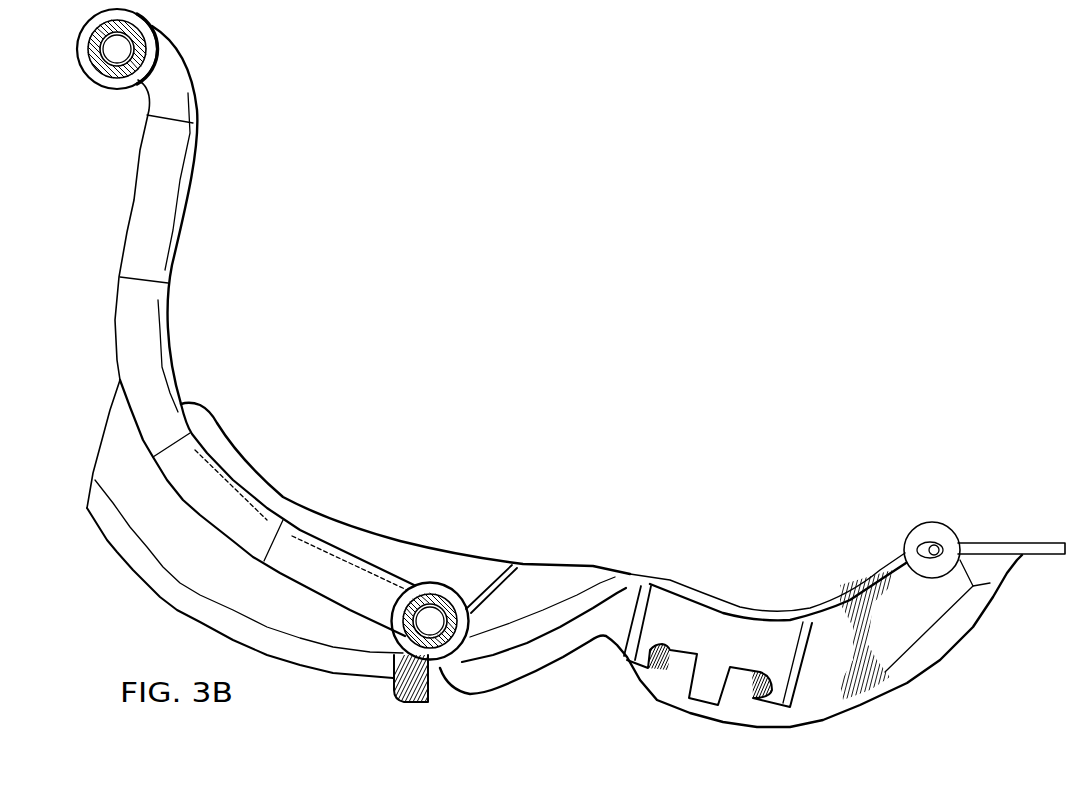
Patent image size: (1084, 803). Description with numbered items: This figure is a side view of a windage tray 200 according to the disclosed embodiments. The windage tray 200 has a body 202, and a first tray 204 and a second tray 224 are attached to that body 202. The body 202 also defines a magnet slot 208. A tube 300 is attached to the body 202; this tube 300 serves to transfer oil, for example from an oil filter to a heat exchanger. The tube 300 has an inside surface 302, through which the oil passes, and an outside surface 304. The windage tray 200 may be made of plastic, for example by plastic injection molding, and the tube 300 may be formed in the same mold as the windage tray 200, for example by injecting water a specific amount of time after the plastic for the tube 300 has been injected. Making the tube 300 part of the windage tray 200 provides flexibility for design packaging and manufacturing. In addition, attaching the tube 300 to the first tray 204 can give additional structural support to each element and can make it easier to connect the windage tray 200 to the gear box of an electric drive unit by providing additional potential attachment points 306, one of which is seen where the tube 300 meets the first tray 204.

The windage tray 200 is at (569, 397).
The body 202 is at (851, 586).
The first tray 204 is at (117, 549).
The magnet slot 208 is at (698, 600).
The second tray 224 is at (912, 677).
The tube 300 is at (133, 196).
The inside surface 302 is at (96, 87).
The outside surface 304 is at (178, 59).
The attachment points 306 is at (425, 704).